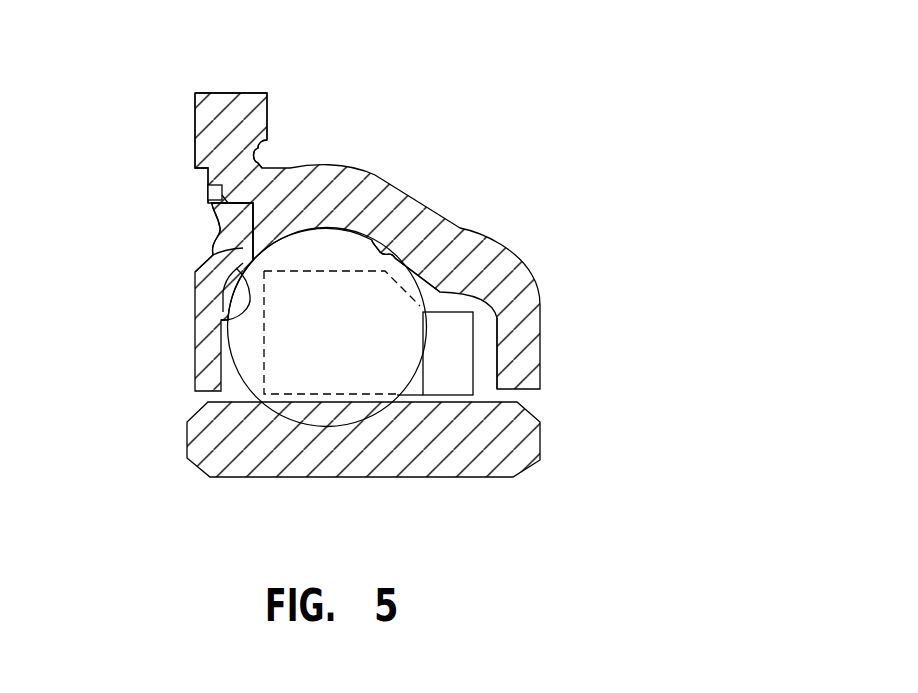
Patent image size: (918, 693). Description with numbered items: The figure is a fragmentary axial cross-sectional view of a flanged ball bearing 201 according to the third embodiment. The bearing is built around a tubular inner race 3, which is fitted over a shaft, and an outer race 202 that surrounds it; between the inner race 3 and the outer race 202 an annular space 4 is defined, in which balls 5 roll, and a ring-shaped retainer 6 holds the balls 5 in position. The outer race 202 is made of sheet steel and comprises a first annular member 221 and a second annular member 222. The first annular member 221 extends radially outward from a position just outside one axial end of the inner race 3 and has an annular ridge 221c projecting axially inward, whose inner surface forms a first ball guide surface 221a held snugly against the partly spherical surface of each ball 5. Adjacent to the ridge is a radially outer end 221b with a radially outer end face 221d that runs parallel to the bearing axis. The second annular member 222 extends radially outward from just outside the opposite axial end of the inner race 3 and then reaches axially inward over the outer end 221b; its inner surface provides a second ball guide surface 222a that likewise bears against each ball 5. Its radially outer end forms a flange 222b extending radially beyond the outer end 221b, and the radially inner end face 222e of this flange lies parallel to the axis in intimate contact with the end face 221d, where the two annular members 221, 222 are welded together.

The flanged ball bearing 201 is at (552, 105).
The outer race 202 is at (385, 161).
The second annular member 222 is at (555, 335).
The second ball guide surface 222a is at (388, 255).
The radially outer end (flange) 222b is at (213, 122).
The radially inner end face 222e is at (260, 166).
The first annular member 221 is at (183, 379).
The first ball guide surface 221a is at (220, 323).
The radially outer end 221b is at (232, 242).
The annular ridge 221c is at (212, 254).
The radially outer end face 221d is at (208, 197).
The annular space 4 is at (486, 363).
The ring-shaped retainer 6 is at (488, 318).
The balls 5 is at (340, 410).
The inner race 3 is at (527, 437).